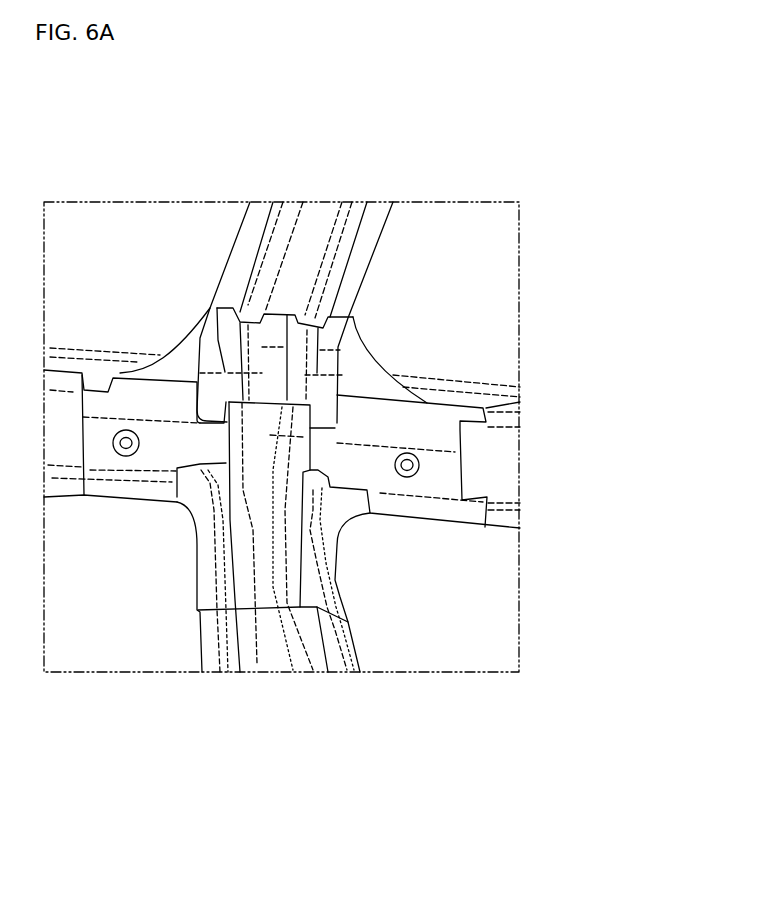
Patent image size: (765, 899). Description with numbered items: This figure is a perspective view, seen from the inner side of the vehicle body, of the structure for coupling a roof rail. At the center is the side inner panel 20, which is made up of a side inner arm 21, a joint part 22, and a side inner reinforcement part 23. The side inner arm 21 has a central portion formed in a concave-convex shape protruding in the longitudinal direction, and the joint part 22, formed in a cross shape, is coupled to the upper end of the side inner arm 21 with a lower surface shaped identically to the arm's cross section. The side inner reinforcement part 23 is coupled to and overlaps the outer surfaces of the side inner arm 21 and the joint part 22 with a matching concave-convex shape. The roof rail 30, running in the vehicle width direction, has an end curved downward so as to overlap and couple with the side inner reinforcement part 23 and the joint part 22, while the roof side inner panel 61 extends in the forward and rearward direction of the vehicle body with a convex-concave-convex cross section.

The side inner panel 20 is at (289, 645).
The side inner arm 21 is at (198, 663).
The joint part 22 is at (362, 650).
The side inner reinforcement part 23 is at (277, 663).
The roof rail 30 is at (303, 253).
The roof side inner panel 61 is at (498, 462).